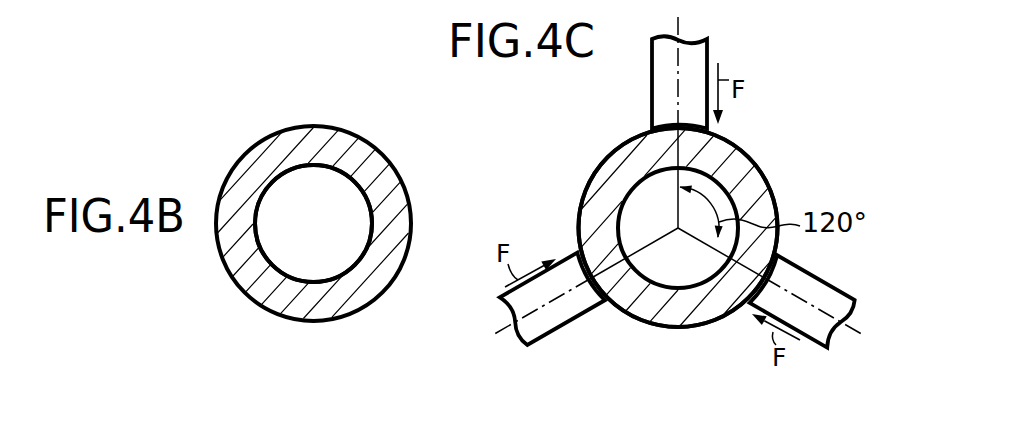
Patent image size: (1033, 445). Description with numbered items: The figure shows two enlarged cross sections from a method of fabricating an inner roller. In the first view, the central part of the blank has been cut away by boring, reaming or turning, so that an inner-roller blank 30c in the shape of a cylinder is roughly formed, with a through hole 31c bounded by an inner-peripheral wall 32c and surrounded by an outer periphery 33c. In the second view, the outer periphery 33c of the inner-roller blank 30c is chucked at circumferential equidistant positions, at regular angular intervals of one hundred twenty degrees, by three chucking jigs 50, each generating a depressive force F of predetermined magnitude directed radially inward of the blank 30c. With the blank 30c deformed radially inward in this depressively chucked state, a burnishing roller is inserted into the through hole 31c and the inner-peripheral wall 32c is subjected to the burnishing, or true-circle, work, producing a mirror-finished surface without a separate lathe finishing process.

In FIG. 4B, the inner-roller blank 30c is at (282, 298).
In FIG. 4C, the inner-roller blank 30c is at (757, 207).
In FIG. 4B, the through hole 31c is at (336, 207).
In FIG. 4B, the inner-peripheral wall 32c is at (333, 278).
In FIG. 4C, the inner-peripheral wall 32c is at (675, 287).
In FIG. 4C, the outer periphery 33c is at (714, 338).
In FIG. 4C, the chucking jig 50 is at (664, 91).